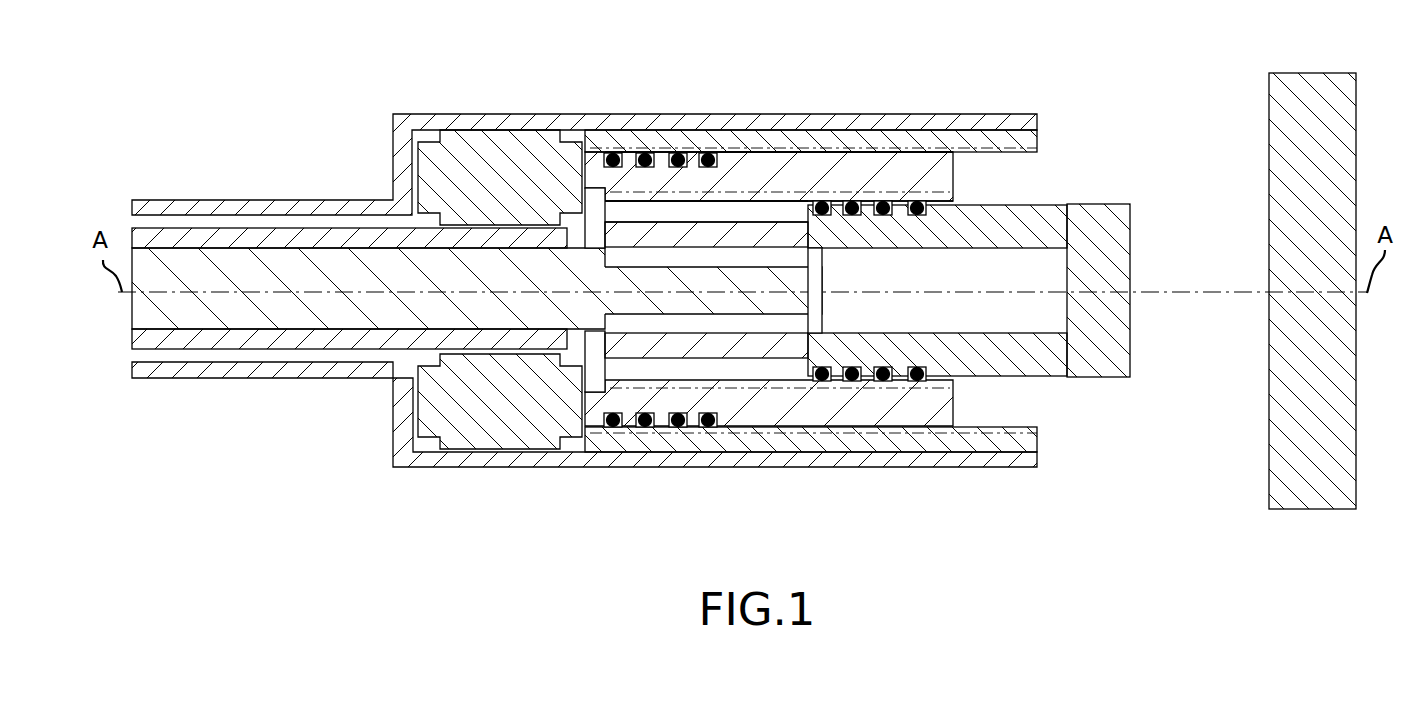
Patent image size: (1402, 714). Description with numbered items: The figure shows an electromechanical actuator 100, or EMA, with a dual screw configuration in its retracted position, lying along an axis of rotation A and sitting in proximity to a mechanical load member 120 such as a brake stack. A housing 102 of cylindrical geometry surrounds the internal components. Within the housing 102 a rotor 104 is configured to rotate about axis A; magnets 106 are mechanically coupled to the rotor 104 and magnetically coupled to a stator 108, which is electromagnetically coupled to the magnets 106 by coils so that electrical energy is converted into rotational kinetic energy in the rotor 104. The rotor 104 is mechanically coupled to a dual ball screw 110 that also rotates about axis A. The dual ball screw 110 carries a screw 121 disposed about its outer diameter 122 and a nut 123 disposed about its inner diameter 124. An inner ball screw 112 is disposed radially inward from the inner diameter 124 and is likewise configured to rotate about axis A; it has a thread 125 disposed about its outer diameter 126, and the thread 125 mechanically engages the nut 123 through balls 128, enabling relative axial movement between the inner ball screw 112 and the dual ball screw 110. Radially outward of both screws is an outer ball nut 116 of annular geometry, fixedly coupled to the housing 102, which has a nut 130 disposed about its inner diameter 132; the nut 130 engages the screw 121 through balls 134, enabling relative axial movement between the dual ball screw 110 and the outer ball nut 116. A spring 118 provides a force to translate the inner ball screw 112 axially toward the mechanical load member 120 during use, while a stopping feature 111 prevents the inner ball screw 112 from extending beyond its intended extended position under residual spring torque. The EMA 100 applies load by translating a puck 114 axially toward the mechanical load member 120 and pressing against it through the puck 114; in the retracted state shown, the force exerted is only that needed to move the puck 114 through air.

The electromechanical actuator 100 is at (1025, 60).
The housing 102 is at (396, 406).
The rotor 104 is at (258, 325).
The magnets 106 is at (248, 238).
The stator 108 is at (427, 162).
The dual ball screw 110 is at (943, 176).
The stopping feature 111 is at (812, 320).
The inner ball screw 112 is at (866, 226).
The puck 114 is at (1120, 315).
The outer ball nut 116 is at (1038, 133).
The spring 118 is at (755, 240).
The mechanical load member 120 is at (1313, 487).
The screw 121 is at (694, 150).
The outer diameter 122 is at (743, 150).
The nut 123 is at (863, 193).
The inner diameter 124 is at (800, 195).
The thread 125 is at (910, 378).
The outer diameter 126 is at (950, 204).
The balls 128 is at (916, 373).
The nut 130 is at (603, 150).
The inner diameter 132 is at (757, 204).
The balls 134 is at (645, 150).